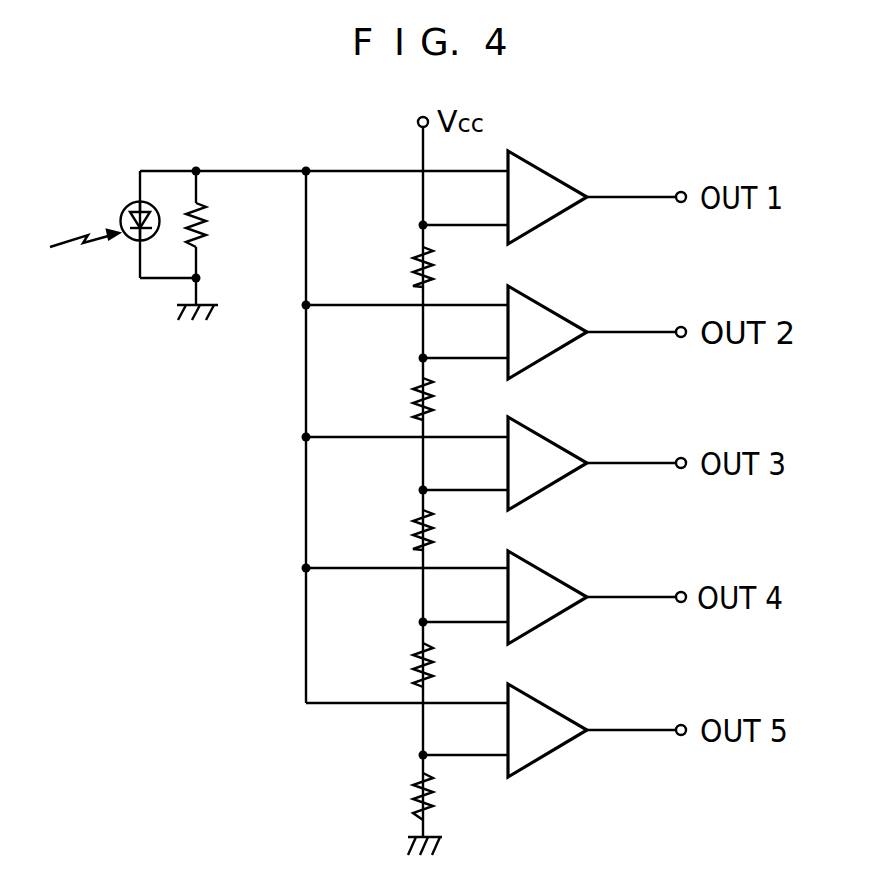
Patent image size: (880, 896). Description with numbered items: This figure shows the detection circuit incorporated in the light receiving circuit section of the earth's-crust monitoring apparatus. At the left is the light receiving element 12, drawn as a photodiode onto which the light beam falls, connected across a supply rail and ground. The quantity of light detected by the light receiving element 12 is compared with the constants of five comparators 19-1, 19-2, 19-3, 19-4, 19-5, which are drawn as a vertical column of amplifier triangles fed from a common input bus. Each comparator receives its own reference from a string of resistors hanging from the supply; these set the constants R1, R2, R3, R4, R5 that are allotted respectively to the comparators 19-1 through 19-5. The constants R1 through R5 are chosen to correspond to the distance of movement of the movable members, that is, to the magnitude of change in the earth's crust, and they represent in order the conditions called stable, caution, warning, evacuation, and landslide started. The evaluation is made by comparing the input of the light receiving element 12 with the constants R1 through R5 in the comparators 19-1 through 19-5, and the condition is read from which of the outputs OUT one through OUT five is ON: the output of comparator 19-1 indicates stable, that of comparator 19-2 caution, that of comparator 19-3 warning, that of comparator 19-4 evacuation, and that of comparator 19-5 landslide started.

The light receiving element 12 is at (131, 205).
The comparator 19-1 is at (556, 178).
The comparator 19-2 is at (558, 313).
The comparator 19-3 is at (556, 444).
The comparator 19-4 is at (560, 575).
The comparator 19-5 is at (562, 709).
The constant R1 is at (447, 268).
The constant R2 is at (447, 401).
The constant R3 is at (447, 533).
The constant R4 is at (447, 665).
The constant R5 is at (447, 797).